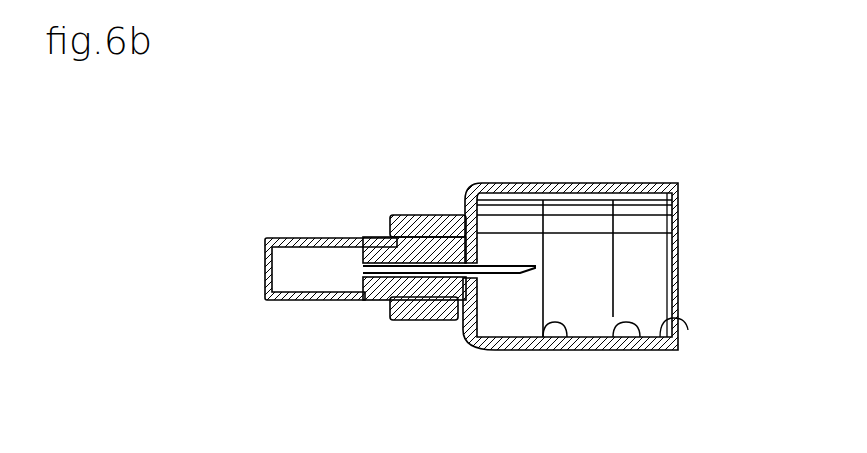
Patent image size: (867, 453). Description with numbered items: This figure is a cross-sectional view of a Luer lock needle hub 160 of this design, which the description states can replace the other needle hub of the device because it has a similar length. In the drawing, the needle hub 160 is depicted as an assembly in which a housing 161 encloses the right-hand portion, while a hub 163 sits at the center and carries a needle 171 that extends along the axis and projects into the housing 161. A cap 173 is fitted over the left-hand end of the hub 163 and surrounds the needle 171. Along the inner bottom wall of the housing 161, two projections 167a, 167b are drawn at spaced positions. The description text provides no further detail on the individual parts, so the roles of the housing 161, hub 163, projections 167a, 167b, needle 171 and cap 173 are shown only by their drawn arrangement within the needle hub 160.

The needle hub 160 is at (465, 142).
The housing 161 is at (673, 313).
The hub 163 is at (367, 300).
The first projection 167a is at (558, 350).
The second projection 167b is at (635, 350).
The needle 171 is at (447, 323).
The cap 173 is at (265, 300).